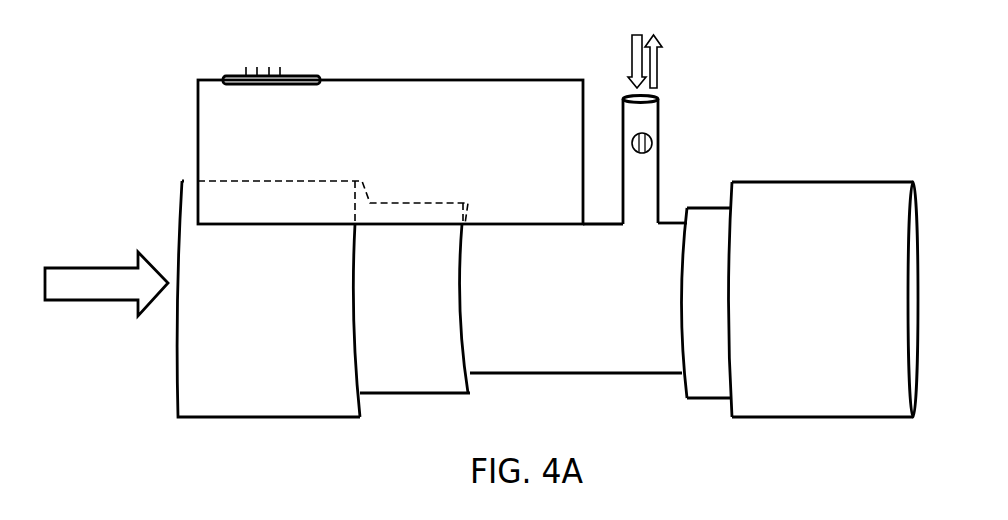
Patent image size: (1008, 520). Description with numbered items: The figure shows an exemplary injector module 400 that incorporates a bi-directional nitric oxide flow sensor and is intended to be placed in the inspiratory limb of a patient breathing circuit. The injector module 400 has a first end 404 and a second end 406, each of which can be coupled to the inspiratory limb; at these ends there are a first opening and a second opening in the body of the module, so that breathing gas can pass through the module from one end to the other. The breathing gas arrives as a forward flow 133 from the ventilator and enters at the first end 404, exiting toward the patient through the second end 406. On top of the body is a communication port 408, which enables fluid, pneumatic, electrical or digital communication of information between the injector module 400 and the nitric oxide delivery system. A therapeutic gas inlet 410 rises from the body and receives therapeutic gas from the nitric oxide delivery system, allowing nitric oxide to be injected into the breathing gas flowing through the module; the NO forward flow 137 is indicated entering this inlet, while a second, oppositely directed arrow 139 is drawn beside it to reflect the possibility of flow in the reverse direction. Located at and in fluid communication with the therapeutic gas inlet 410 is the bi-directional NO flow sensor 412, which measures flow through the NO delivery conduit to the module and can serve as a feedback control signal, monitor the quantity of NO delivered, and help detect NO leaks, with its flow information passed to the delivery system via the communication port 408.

The injector module 400 is at (191, 49).
The first end 404 is at (197, 181).
The second end 406 is at (793, 181).
The communication port 408 is at (286, 58).
The therapeutic gas inlet 410 is at (635, 115).
The bi-directional NO flow sensor 412 is at (650, 135).
The NO forward flow 137 is at (632, 55).
The outflow 139 is at (659, 55).
The forward flow 133 is at (85, 268).